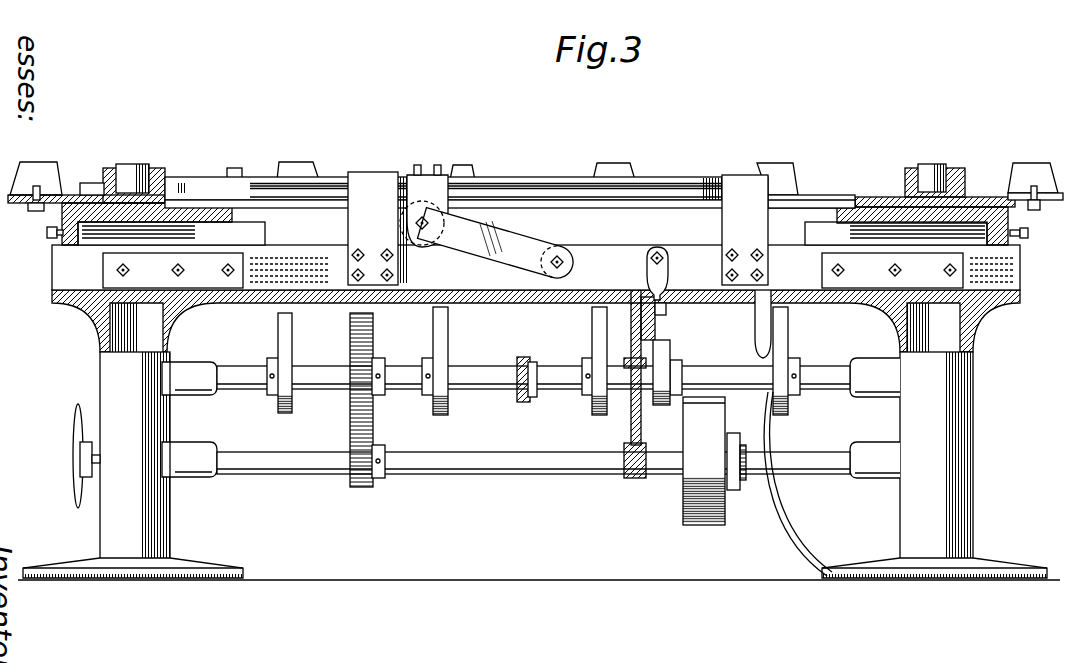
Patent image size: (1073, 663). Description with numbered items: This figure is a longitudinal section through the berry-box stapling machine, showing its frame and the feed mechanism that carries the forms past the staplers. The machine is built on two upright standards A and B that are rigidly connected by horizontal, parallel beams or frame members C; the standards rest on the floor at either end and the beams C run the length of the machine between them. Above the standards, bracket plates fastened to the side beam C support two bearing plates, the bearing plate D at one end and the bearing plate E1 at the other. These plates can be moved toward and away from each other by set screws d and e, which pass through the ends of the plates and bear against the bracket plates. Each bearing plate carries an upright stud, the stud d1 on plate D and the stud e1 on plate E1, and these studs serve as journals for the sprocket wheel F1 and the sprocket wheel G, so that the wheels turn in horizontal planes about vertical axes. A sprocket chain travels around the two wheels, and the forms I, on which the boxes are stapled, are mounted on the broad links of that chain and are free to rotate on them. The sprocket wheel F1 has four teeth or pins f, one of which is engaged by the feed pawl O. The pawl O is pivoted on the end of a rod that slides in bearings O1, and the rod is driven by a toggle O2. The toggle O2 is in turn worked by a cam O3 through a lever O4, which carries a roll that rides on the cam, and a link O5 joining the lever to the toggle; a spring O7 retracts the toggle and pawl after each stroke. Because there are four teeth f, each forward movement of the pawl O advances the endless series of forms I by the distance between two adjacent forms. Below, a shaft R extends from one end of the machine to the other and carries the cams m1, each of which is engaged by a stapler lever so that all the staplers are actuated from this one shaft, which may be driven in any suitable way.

The standard A is at (157, 523).
The standard B is at (907, 512).
The frame member C is at (247, 223).
The bearing plate D is at (193, 212).
The bearing plate E1 is at (965, 212).
The sprocket wheel F1 is at (72, 193).
The sprocket wheel G is at (867, 205).
The form I is at (302, 172).
The feed pawl O is at (180, 178).
The bearing O1 is at (372, 180).
The toggle O2 is at (557, 258).
The cam O3 is at (670, 348).
The lever O4 is at (660, 318).
The link O5 is at (655, 257).
The spring O7 is at (643, 340).
The shaft R is at (500, 375).
The set screw d is at (47, 231).
The stud d1 is at (143, 182).
The set screw e is at (1029, 231).
The stud e1 is at (920, 175).
The teeth or pins f is at (93, 183).
The cam m1 is at (280, 318).